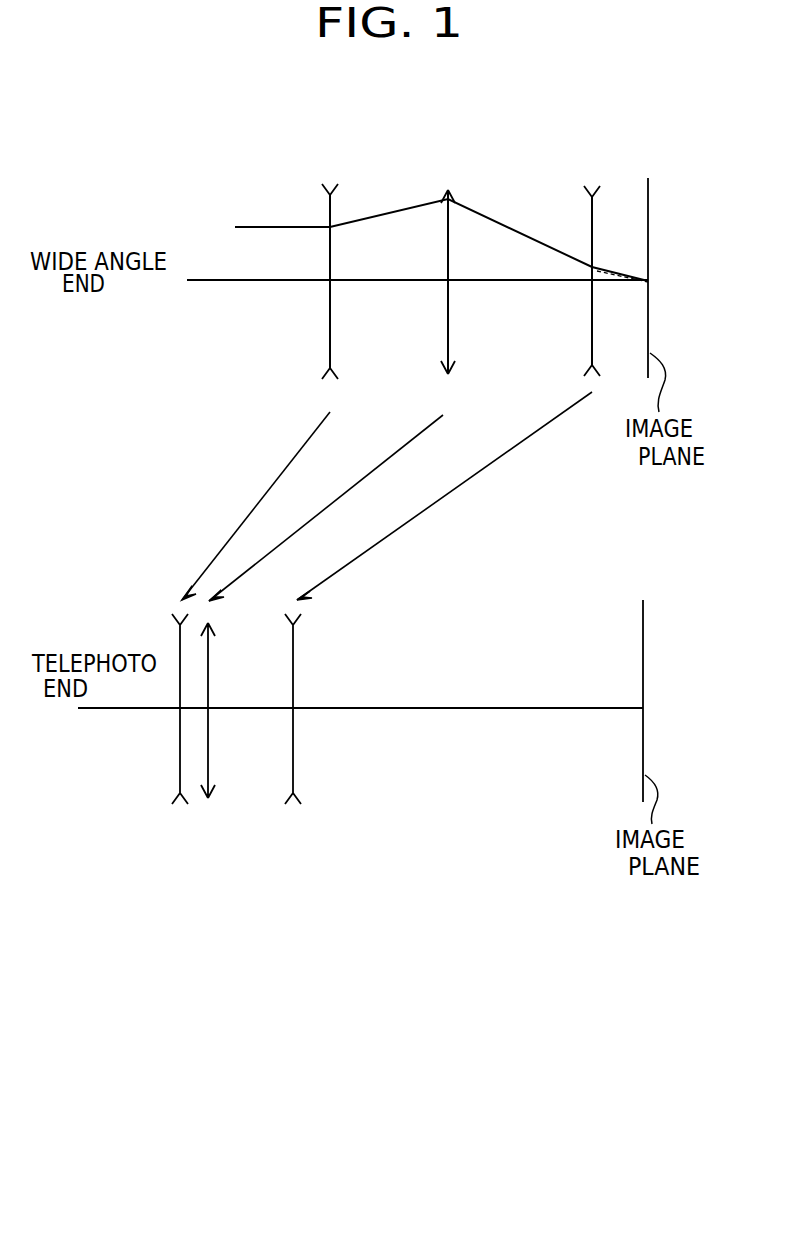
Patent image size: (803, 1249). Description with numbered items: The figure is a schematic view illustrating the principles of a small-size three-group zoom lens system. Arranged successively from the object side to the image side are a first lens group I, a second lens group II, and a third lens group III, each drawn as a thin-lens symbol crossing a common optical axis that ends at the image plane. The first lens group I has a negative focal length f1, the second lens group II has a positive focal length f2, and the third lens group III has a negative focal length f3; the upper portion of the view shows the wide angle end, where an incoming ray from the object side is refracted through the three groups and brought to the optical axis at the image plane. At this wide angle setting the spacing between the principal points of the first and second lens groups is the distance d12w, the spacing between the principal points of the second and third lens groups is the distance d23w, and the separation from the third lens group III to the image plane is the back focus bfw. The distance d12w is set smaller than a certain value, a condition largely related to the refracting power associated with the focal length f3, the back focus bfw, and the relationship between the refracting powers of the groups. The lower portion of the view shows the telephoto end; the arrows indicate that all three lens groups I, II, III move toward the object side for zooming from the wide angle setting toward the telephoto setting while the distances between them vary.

The first lens group I is at (312, 160).
The second lens group II is at (442, 122).
The third lens group III is at (581, 122).
The focal length of the first lens group f1 is at (348, 274).
The focal length of the second lens group f2 is at (465, 276).
The focal length of the third lens group f3 is at (609, 273).
The distance between the principal points of the first and second lens groups at the d12w is at (389, 267).
The distance between the principal points of the second and third lens groups at the d23w is at (520, 267).
The back focus at the wide angle setting bfw is at (620, 298).